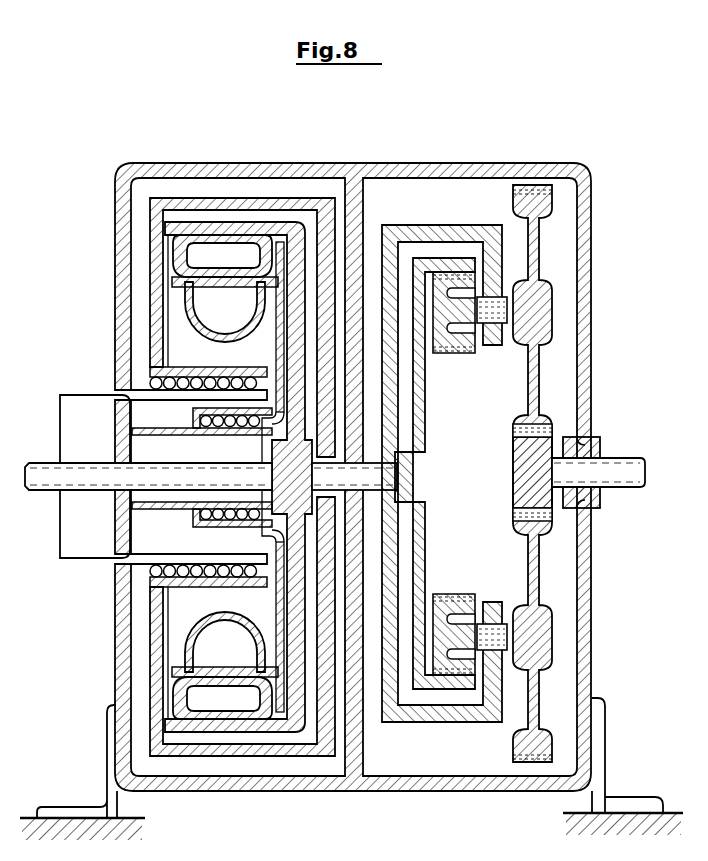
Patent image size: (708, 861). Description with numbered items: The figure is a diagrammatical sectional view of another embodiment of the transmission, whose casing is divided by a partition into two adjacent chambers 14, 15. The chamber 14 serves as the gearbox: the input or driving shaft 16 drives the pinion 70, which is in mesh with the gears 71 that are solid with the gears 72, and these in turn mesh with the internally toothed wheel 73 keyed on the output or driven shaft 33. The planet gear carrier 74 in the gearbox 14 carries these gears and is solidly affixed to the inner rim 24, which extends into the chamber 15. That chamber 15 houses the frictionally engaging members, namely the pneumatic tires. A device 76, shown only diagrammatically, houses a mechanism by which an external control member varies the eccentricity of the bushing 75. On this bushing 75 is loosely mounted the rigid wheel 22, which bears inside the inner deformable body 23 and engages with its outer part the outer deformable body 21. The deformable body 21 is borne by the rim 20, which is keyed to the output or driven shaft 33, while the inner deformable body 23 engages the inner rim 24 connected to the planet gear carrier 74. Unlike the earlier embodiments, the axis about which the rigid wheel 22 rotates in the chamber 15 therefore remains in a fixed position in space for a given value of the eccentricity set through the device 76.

The chamber 14 is at (434, 762).
The chamber 15 is at (244, 762).
The input or driving shaft 16 is at (623, 478).
The rim 20 is at (297, 228).
The deformable body 21 is at (262, 234).
The rigid wheel 22 is at (281, 280).
The inner deformable body 23 is at (185, 302).
The inner rim 24 is at (182, 366).
The output or driven shaft 33 is at (43, 493).
The pinion 70 is at (526, 468).
The gears 71 is at (530, 197).
The gears 72 is at (462, 350).
The internally toothed wheel 73 is at (416, 408).
The planet gear carrier 74 is at (422, 225).
The bushing 75 is at (167, 504).
The device 76 is at (88, 545).